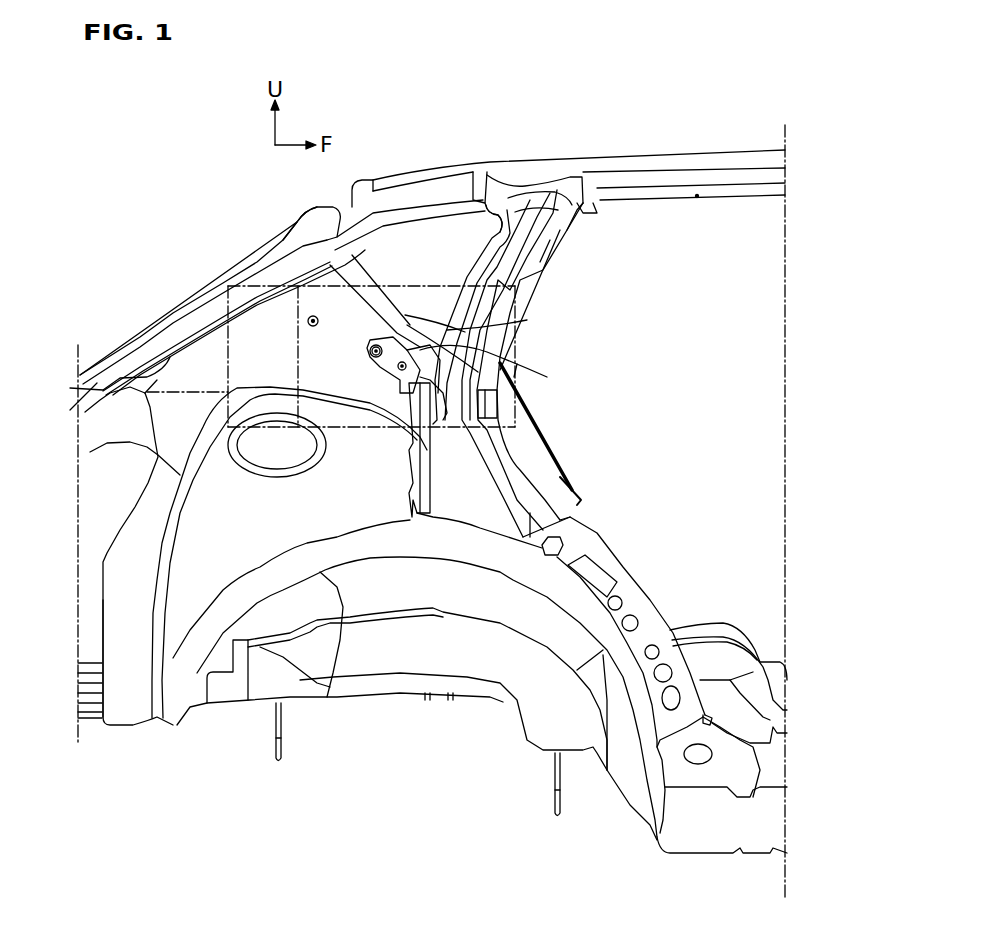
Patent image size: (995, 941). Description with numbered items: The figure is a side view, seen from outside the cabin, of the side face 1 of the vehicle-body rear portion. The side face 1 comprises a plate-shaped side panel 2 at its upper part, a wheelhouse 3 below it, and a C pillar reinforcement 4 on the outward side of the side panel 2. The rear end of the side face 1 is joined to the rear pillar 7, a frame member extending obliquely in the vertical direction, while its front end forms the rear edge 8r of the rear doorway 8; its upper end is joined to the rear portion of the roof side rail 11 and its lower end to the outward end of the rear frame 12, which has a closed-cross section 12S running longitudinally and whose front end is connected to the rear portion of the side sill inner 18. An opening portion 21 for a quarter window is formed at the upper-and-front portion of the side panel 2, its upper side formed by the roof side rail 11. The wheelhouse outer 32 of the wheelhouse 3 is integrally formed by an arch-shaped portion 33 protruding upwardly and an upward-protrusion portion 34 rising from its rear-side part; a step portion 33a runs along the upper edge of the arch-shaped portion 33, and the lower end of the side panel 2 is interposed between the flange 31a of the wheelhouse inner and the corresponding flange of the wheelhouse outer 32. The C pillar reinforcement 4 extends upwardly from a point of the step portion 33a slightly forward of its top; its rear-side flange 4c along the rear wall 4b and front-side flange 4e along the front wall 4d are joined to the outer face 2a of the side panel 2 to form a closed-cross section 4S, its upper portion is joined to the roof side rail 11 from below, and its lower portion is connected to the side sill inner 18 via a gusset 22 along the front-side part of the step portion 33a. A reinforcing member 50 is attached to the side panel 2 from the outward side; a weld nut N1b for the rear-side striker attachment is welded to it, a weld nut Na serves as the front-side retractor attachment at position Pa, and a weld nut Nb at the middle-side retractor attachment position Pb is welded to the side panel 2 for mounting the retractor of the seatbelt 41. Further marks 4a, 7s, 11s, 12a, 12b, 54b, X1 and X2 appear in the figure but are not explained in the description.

The side face 1 is at (283, 256).
The side panel 2 is at (188, 298).
The outer face of the side panel 2a is at (198, 367).
The wheelhouse 3 is at (72, 615).
The C pillar reinforcement 4 is at (550, 281).
The pillar upper end 4a is at (571, 190).
The rear wall 4b is at (480, 200).
The rear-side flange 4c is at (497, 245).
The front wall 4d is at (572, 220).
The front-side flange 4e is at (548, 262).
The closed-cross section 4S is at (625, 283).
The rear pillar 7 is at (113, 347).
The rear roof rail end 7s is at (77, 357).
The rear doorway 8 is at (673, 414).
The rear edge of the rear doorway 8r is at (533, 483).
The roof side rail 11 is at (627, 152).
The roof side rail side surface 11s is at (697, 196).
The rear frame 12 is at (237, 714).
The side sill upper flange 12a is at (90, 660).
The side sill lower flange 12b is at (90, 718).
The closed-cross section 12S is at (223, 683).
The side sill inner 18 is at (690, 853).
The opening portion for quarter window 21 is at (460, 254).
The gusset 22 is at (628, 577).
The flange of the wheelhouse inner 31a is at (78, 392).
The wheelhouse outer 32 is at (122, 504).
The arch-shaped portion 33 is at (338, 685).
The step portion 33a is at (333, 537).
The upward-protrusion portion 34 is at (90, 452).
The seatbelt 41 is at (510, 403).
The reinforcing member 50 is at (510, 347).
The bracket flange 54b is at (517, 364).
The weld nut N1b is at (475, 465).
The weld nut Na is at (393, 366).
The weld nut Nb is at (315, 326).
The front-side retractor-attachment position Pa is at (371, 345).
The middle-side retractor-attachment position Pb is at (304, 322).
The section line X1 is at (430, 284).
The section line X2 is at (257, 283).